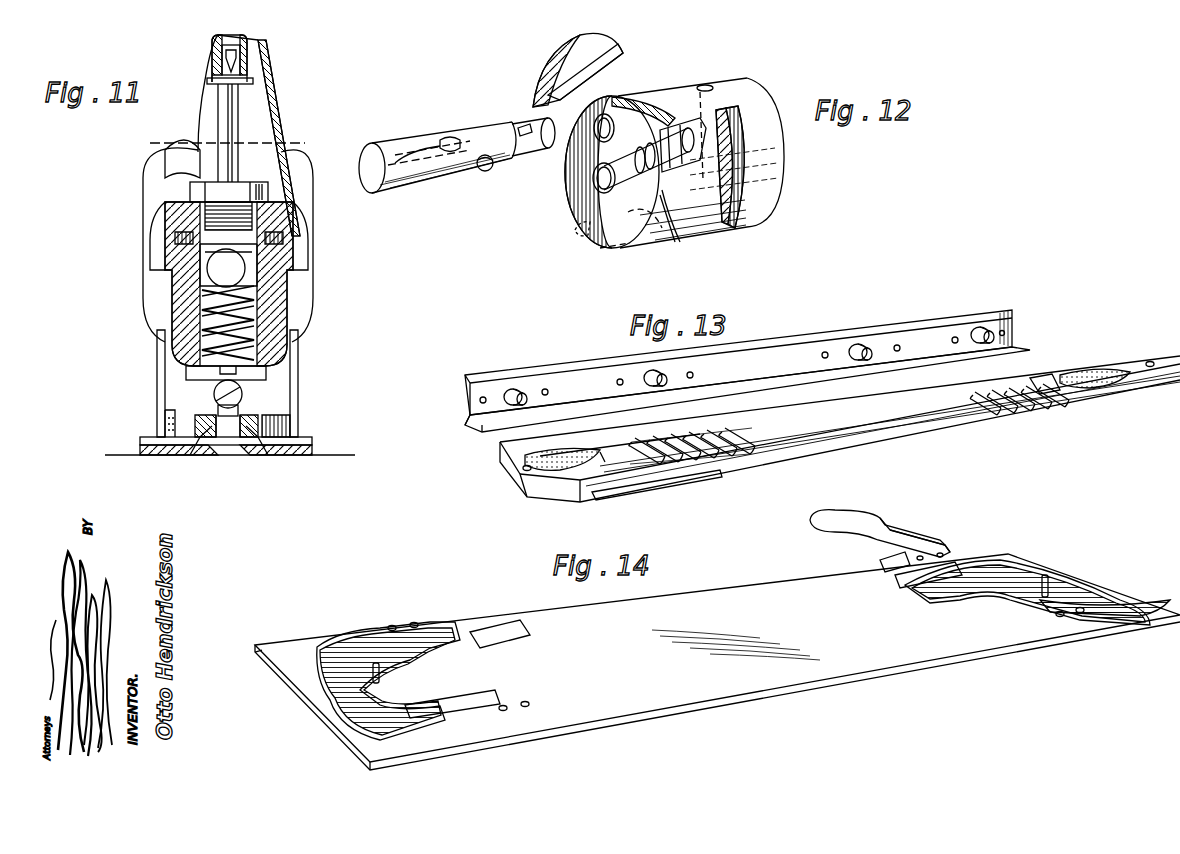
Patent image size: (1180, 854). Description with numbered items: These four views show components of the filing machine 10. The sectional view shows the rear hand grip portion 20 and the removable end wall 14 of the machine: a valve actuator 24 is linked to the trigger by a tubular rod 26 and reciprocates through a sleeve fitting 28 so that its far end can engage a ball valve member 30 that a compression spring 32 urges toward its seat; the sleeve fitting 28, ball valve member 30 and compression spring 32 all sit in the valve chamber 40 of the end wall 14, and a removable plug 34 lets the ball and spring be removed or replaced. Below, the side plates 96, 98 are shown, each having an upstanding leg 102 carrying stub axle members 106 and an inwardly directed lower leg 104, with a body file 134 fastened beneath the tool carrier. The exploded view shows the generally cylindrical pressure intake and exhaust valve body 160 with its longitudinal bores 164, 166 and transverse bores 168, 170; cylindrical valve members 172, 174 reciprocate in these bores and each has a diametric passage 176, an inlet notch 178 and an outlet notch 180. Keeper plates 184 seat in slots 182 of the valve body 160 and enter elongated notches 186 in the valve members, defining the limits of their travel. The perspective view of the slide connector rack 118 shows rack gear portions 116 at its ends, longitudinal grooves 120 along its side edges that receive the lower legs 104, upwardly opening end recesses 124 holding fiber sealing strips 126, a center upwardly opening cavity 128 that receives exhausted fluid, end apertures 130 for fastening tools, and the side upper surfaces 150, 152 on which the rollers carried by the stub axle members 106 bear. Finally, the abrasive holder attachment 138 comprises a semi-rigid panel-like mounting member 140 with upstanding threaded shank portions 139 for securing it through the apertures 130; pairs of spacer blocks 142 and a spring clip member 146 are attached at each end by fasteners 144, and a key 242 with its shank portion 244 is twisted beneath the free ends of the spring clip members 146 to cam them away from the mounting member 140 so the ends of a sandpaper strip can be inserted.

In FIG. 11, the filing machine 10 is at (326, 285).
In FIG. 11, the end wall 14 is at (278, 328).
In FIG. 11, the rear hand grip portion 20 is at (278, 136).
In FIG. 11, the valve actuator 24 is at (228, 130).
In FIG. 11, the tubular rod 26 is at (245, 65).
In FIG. 11, the sleeve fitting 28 is at (268, 190).
In FIG. 11, the ball valve member 30 is at (262, 258).
In FIG. 11, the compression spring 32 is at (215, 312).
In FIG. 11, the removable plug 34 is at (268, 372).
In FIG. 11, the valve chamber 40 is at (200, 273).
In FIG. 11, the side plate 96 is at (298, 406).
In FIG. 11, the side plate 98 is at (165, 392).
In FIG. 11, the upstanding leg 102 is at (157, 369).
In FIG. 13, the upstanding leg 102 is at (468, 398).
In FIG. 13, the lower leg 104 is at (482, 430).
In FIG. 13, the stub axle member 106 is at (526, 392).
In FIG. 13, the rack gear portion 116 is at (700, 445).
In FIG. 13, the slide connector rack 118 is at (877, 462).
In FIG. 13, the longitudinal groove 120 is at (930, 438).
In FIG. 13, the upwardly opening recess 124 is at (626, 455).
In FIG. 13, the sealing strip 126 is at (565, 460).
In FIG. 13, the center upwardly opening cavity 128 is at (960, 412).
In FIG. 13, the aperture 130 is at (520, 472).
In FIG. 11, the body file 134 is at (312, 443).
In FIG. 14, the abrasive holder attachment 138 is at (469, 611).
In FIG. 14, the threaded shank portion 139 is at (382, 672).
In FIG. 14, the mounting member 140 is at (806, 675).
In FIG. 14, the spacer block 142 is at (540, 690).
In FIG. 14, the fastener 144 is at (414, 624).
In FIG. 14, the spring clip member 146 is at (318, 637).
In FIG. 13, the side upper surface 150 is at (790, 452).
In FIG. 13, the side upper surface 152 is at (1044, 372).
In FIG. 12, the valve body 160 is at (790, 180).
In FIG. 12, the longitudinal bore 164 is at (608, 114).
In FIG. 12, the longitudinal bore 166 is at (770, 112).
In FIG. 12, the transverse bore 168 is at (708, 86).
In FIG. 12, the transverse bore 170 is at (620, 238).
In FIG. 12, the valve member 172 is at (448, 178).
In FIG. 12, the valve member 174 is at (605, 185).
In FIG. 12, the diametric passage 176 is at (512, 132).
In FIG. 12, the inlet notch 178 is at (520, 127).
In FIG. 12, the outlet notch 180 is at (487, 172).
In FIG. 12, the slot 182 is at (650, 88).
In FIG. 12, the keeper plate 184 is at (540, 65).
In FIG. 12, the elongated notch 186 is at (405, 150).
In FIG. 14, the key 242 is at (908, 524).
In FIG. 14, the shank portion 244 is at (925, 540).